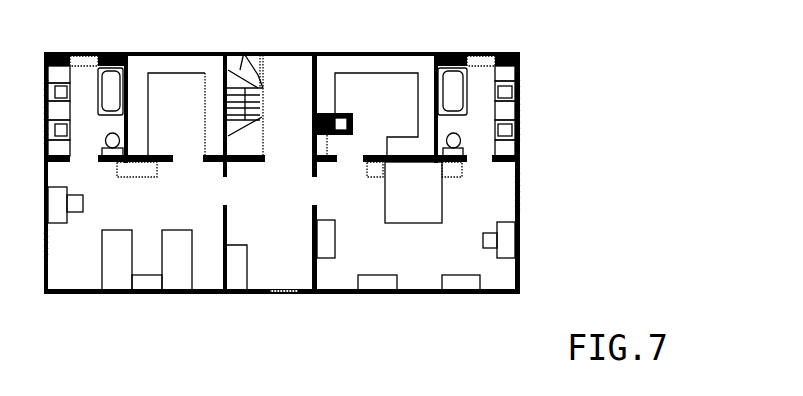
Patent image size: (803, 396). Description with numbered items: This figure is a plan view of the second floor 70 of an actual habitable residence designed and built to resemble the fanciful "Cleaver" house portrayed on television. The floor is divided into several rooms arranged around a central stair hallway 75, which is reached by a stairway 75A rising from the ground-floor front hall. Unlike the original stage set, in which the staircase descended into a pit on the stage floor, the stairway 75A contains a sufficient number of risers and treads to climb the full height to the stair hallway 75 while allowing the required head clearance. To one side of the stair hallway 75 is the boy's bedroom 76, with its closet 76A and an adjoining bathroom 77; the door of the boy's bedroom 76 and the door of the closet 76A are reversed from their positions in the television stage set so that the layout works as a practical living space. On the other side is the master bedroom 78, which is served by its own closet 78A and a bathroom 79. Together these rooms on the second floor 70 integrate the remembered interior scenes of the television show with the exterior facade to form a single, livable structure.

The second floor 70 is at (363, 173).
The stair hallway 75 is at (281, 235).
The stairway 75A is at (267, 107).
The boy's bedroom 76 is at (118, 240).
The closet 76A is at (161, 125).
The bathroom 77 is at (83, 111).
The master bedroom 78 is at (439, 227).
The closet 78A is at (367, 125).
The bathroom 79 is at (479, 111).